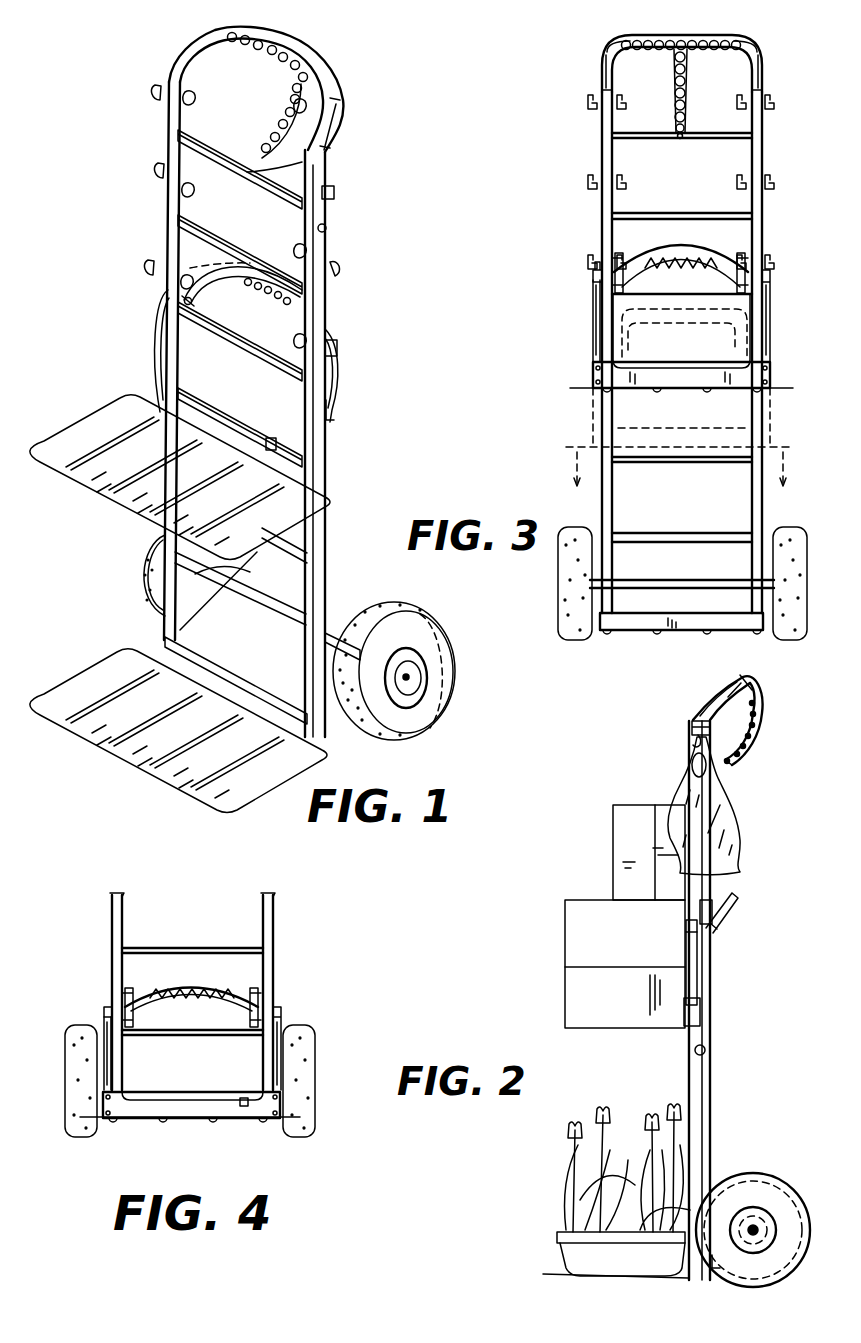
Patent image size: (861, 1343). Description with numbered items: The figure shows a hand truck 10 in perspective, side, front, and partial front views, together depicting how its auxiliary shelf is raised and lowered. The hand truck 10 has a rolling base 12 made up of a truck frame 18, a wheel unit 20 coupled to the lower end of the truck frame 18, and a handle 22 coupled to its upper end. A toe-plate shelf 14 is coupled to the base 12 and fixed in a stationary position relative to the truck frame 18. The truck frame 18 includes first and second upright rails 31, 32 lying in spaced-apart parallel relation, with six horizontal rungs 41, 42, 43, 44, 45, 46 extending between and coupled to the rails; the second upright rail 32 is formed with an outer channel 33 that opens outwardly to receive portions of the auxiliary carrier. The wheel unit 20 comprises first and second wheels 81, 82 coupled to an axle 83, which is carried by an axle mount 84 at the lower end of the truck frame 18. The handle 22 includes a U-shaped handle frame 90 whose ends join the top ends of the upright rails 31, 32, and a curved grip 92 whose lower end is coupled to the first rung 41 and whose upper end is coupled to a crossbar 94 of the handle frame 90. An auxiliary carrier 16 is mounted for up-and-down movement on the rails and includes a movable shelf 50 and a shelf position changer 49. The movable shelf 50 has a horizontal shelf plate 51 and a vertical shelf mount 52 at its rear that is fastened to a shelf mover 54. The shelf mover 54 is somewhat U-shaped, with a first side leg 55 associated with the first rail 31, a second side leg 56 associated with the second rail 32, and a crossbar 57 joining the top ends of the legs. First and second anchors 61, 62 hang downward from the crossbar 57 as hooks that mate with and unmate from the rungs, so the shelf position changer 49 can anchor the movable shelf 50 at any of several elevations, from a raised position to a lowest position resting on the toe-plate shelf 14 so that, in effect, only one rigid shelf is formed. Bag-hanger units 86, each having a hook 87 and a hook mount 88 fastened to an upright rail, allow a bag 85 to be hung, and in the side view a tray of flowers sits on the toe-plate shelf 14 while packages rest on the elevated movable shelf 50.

In FIG. 1, the hand truck 10 is at (95, 185).
In FIG. 3, the hand truck 10 is at (774, 160).
In FIG. 2, the hand truck 10 is at (772, 822).
In FIG. 4, the hand truck 10 is at (82, 942).
In FIG. 1, the base 12 is at (147, 612).
In FIG. 3, the base 12 is at (778, 519).
In FIG. 2, the base 12 is at (719, 1176).
In FIG. 4, the base 12 is at (273, 978).
In FIG. 1, the toe-plate shelf 14 is at (153, 745).
In FIG. 3, the toe-plate shelf 14 is at (628, 639).
In FIG. 2, the toe-plate shelf 14 is at (553, 1270).
In FIG. 4, the toe-plate shelf 14 is at (134, 1127).
In FIG. 1, the auxiliary carrier 16 is at (351, 497).
In FIG. 3, the auxiliary carrier 16 is at (775, 335).
In FIG. 2, the auxiliary carrier 16 is at (717, 1003).
In FIG. 4, the auxiliary carrier 16 is at (288, 1018).
In FIG. 1, the truck frame 18 is at (330, 602).
In FIG. 3, the truck frame 18 is at (600, 232).
In FIG. 2, the truck frame 18 is at (687, 1060).
In FIG. 4, the truck frame 18 is at (110, 990).
In FIG. 1, the wheel unit 20 is at (365, 745).
In FIG. 3, the wheel unit 20 is at (800, 526).
In FIG. 2, the wheel unit 20 is at (772, 1168).
In FIG. 4, the wheel unit 20 is at (323, 1042).
In FIG. 1, the handle 22 is at (349, 113).
In FIG. 3, the handle 22 is at (605, 46).
In FIG. 2, the handle 22 is at (772, 715).
In FIG. 1, the first upright rail 31 is at (170, 218).
In FIG. 3, the first upright rail 31 is at (613, 495).
In FIG. 4, the first upright rail 31 is at (112, 923).
In FIG. 1, the second upright rail 32 is at (318, 302).
In FIG. 3, the second upright rail 32 is at (751, 488).
In FIG. 2, the second upright rail 32 is at (711, 1107).
In FIG. 4, the second upright rail 32 is at (273, 912).
In FIG. 1, the outer channel 33 is at (328, 227).
In FIG. 2, the outer channel 33 is at (705, 1053).
In FIG. 1, the first rung 41 is at (231, 168).
In FIG. 3, the first rung 41 is at (642, 137).
In FIG. 1, the rung 42 is at (232, 248).
In FIG. 3, the rung 42 is at (660, 213).
In FIG. 1, the rung 43 is at (222, 338).
In FIG. 1, the rung 44 is at (253, 427).
In FIG. 1, the rung 45 is at (286, 548).
In FIG. 3, the rung 45 is at (682, 459).
In FIG. 4, the rung 45 is at (153, 948).
In FIG. 1, the rung 46 is at (270, 613).
In FIG. 3, the rung 46 is at (667, 532).
In FIG. 4, the rung 46 is at (175, 1034).
In FIG. 1, the shelf position changer 49 is at (350, 342).
In FIG. 3, the shelf position changer 49 is at (729, 250).
In FIG. 2, the shelf position changer 49 is at (745, 907).
In FIG. 4, the shelf position changer 49 is at (233, 986).
In FIG. 1, the movable shelf 50 is at (70, 418).
In FIG. 3, the movable shelf 50 is at (576, 386).
In FIG. 2, the movable shelf 50 is at (553, 1010).
In FIG. 4, the movable shelf 50 is at (158, 1112).
In FIG. 1, the shelf plate 51 is at (97, 473).
In FIG. 3, the shelf plate 51 is at (780, 385).
In FIG. 2, the shelf plate 51 is at (605, 1026).
In FIG. 4, the shelf plate 51 is at (200, 1107).
In FIG. 1, the shelf mount 52 is at (280, 446).
In FIG. 3, the shelf mount 52 is at (653, 381).
In FIG. 4, the shelf mount 52 is at (244, 1102).
In FIG. 1, the shelf mover 54 is at (341, 388).
In FIG. 3, the shelf mover 54 is at (590, 300).
In FIG. 2, the shelf mover 54 is at (708, 950).
In FIG. 4, the shelf mover 54 is at (100, 1012).
In FIG. 1, the first side leg 55 is at (157, 337).
In FIG. 3, the first side leg 55 is at (592, 325).
In FIG. 4, the first side leg 55 is at (106, 1053).
In FIG. 1, the second side leg 56 is at (331, 411).
In FIG. 3, the second side leg 56 is at (771, 294).
In FIG. 2, the second side leg 56 is at (699, 978).
In FIG. 4, the second side leg 56 is at (281, 1063).
In FIG. 1, the crossbar 57 is at (258, 292).
In FIG. 3, the crossbar 57 is at (688, 254).
In FIG. 2, the crossbar 57 is at (735, 897).
In FIG. 4, the crossbar 57 is at (172, 988).
In FIG. 1, the first anchor 61 is at (191, 302).
In FIG. 3, the first anchor 61 is at (628, 283).
In FIG. 4, the first anchor 61 is at (134, 1020).
In FIG. 3, the second anchor 62 is at (735, 284).
In FIG. 4, the second anchor 62 is at (243, 1023).
In FIG. 1, the first wheel 81 is at (143, 576).
In FIG. 3, the first wheel 81 is at (569, 590).
In FIG. 1, the second wheel 82 is at (434, 624).
In FIG. 3, the second wheel 82 is at (793, 627).
In FIG. 2, the second wheel 82 is at (787, 1254).
In FIG. 1, the axle 83 is at (410, 680).
In FIG. 3, the axle 83 is at (665, 583).
In FIG. 2, the axle 83 is at (758, 1226).
In FIG. 1, the axle mount 84 is at (348, 627).
In FIG. 2, the axle mount 84 is at (714, 1255).
In FIG. 2, the bag 85 is at (722, 810).
In FIG. 1, the bag-hanger unit 86 is at (154, 91).
In FIG. 3, the bag-hanger unit 86 is at (777, 96).
In FIG. 2, the bag-hanger unit 86 is at (688, 732).
In FIG. 1, the hook 87 is at (335, 193).
In FIG. 3, the hook 87 is at (590, 100).
In FIG. 2, the hook 87 is at (694, 739).
In FIG. 3, the hook mount 88 is at (622, 97).
In FIG. 1, the U-shaped handle frame 90 is at (338, 142).
In FIG. 3, the U-shaped handle frame 90 is at (764, 68).
In FIG. 2, the U-shaped handle frame 90 is at (713, 697).
In FIG. 1, the curved grip 92 is at (272, 127).
In FIG. 3, the curved grip 92 is at (690, 98).
In FIG. 2, the curved grip 92 is at (758, 738).
In FIG. 1, the crossbar 94 is at (312, 64).
In FIG. 3, the crossbar 94 is at (695, 33).